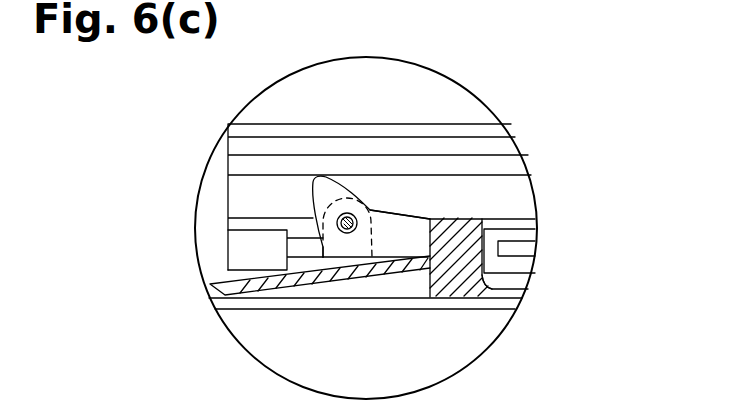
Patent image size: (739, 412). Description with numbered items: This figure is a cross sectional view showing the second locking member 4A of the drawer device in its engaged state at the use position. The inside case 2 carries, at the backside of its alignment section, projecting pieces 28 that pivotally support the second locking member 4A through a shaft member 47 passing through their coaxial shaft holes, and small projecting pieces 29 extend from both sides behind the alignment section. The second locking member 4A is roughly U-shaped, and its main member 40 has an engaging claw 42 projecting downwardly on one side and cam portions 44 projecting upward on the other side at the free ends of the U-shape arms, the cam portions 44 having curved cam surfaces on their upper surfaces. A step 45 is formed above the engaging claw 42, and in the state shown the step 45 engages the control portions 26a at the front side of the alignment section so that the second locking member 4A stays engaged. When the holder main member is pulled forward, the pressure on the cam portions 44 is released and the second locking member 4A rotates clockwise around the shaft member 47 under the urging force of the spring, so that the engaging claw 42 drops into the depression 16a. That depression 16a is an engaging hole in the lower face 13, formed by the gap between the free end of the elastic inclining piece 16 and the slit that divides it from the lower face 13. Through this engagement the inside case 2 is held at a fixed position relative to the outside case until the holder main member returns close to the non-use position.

The inside case 2 is at (228, 165).
The small projecting pieces 29 is at (238, 247).
The cam portions 44 is at (338, 183).
The second locking member 4A is at (521, 176).
The main member 40 is at (447, 218).
The shaft member 47 is at (347, 233).
The projecting pieces 28 is at (333, 257).
The inclining piece 16 is at (283, 290).
The engaging claw 42 is at (452, 272).
The step 45 is at (484, 229).
The control portions 26a is at (533, 242).
The depression 16a is at (528, 289).
The lower face 13 is at (505, 295).